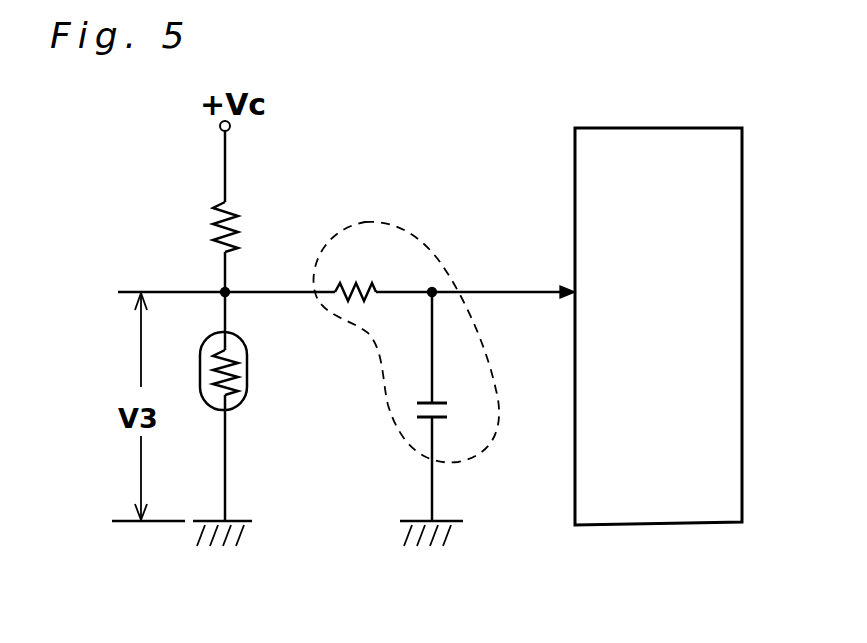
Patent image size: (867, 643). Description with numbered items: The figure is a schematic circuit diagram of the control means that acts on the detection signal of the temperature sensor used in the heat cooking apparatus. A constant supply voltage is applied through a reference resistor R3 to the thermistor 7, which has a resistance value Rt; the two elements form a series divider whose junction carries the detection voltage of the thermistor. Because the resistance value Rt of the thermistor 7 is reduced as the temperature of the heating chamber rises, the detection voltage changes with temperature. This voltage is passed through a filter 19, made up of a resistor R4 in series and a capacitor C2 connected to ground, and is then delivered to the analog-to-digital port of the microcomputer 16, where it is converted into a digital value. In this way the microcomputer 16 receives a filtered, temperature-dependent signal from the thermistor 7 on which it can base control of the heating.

The thermistor 7 is at (246, 388).
The microcomputer 16 is at (620, 140).
The filter 19 is at (428, 250).
The reference resistor R3 is at (228, 206).
The resistance value of the thermistor Rt is at (238, 372).
The resistor R4 is at (370, 286).
The capacitor C2 is at (438, 415).